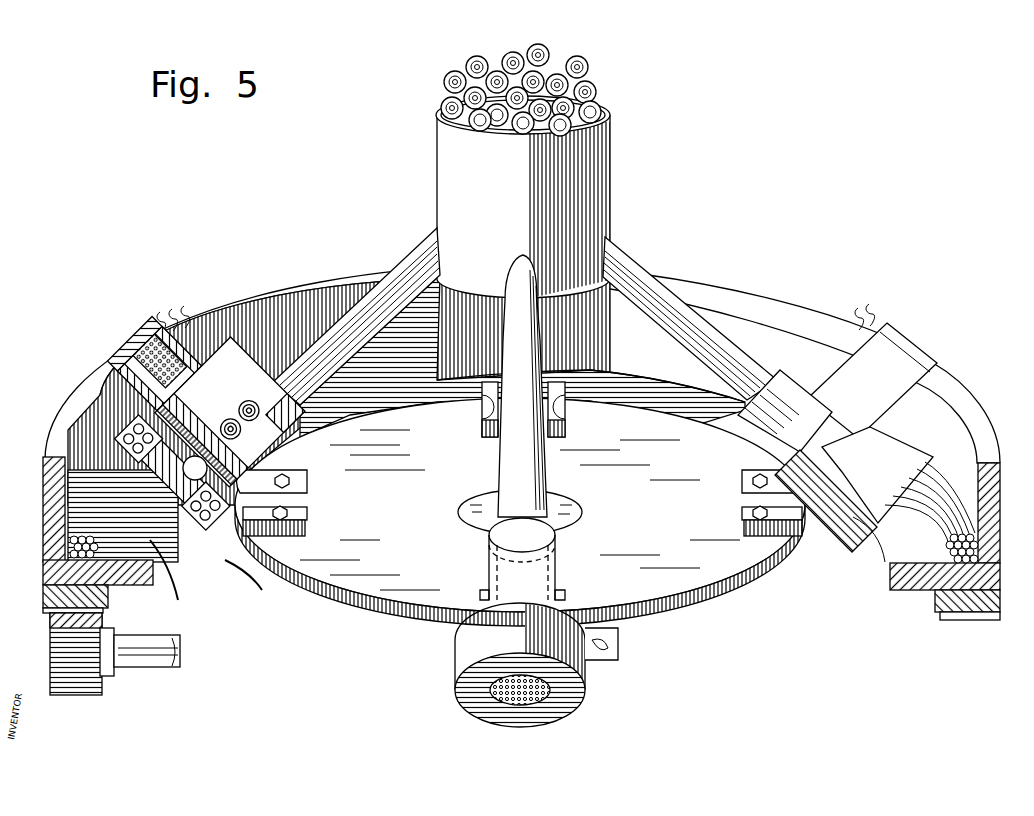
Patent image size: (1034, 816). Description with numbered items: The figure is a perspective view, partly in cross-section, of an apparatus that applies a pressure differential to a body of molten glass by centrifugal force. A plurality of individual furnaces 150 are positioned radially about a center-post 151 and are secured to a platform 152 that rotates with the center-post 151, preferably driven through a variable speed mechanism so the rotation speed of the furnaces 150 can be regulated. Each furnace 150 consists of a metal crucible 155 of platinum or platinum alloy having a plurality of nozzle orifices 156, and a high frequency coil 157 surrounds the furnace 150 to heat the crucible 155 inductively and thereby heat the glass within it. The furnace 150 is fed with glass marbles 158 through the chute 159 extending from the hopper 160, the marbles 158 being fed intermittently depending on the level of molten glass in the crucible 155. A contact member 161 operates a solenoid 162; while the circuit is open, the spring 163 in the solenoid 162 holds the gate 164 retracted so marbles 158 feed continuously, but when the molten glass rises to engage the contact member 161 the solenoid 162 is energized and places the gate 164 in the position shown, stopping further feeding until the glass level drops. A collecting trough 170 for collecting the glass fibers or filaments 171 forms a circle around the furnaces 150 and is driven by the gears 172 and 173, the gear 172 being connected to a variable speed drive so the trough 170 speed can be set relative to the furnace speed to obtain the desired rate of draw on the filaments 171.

The furnace 150 is at (272, 452).
The center-post 151 is at (498, 478).
The platform 152 is at (443, 533).
The metal crucible 155 is at (176, 537).
The nozzle orifices 156 is at (586, 690).
The high frequency coil 157 is at (218, 567).
The glass marbles 158 is at (541, 51).
The chute 159 is at (420, 251).
The hopper 160 is at (445, 170).
The contact member 161 is at (117, 393).
The solenoid 162 is at (563, 532).
The spring 163 is at (279, 314).
The gate 164 is at (330, 436).
The collecting trough 170 is at (48, 477).
The glass fibers or filaments 171 is at (72, 522).
The gear 172 is at (95, 695).
The gear 173 is at (108, 590).